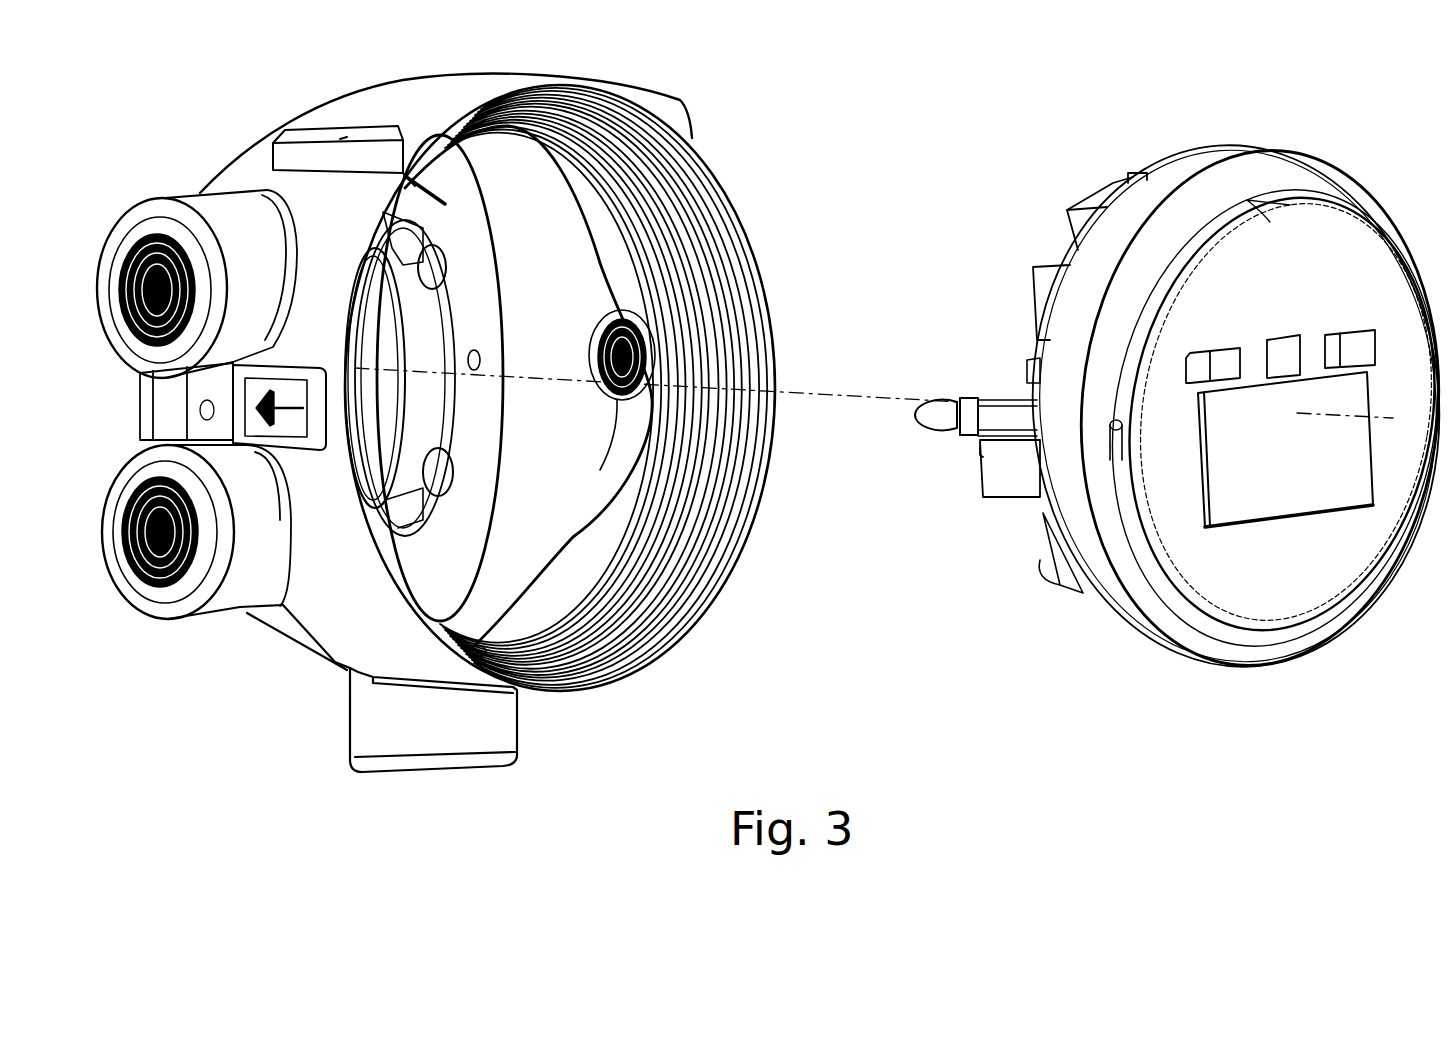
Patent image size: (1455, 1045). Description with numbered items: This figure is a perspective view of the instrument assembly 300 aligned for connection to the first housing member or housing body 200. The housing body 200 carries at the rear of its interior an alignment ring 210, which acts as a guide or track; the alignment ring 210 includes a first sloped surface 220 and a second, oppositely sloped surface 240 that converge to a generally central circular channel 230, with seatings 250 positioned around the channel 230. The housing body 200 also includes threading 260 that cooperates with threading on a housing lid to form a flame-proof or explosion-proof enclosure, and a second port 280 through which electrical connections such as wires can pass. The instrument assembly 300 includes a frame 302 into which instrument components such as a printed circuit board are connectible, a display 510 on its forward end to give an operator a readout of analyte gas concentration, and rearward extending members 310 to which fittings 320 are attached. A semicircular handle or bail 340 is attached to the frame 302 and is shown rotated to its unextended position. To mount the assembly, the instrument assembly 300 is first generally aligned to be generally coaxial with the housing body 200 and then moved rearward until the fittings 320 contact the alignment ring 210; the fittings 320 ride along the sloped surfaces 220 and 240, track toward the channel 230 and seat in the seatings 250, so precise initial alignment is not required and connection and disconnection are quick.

The housing body 200 is at (287, 653).
The alignment ring 210 is at (450, 190).
The first sloped surface 220 is at (472, 257).
The central circular channel 230 is at (463, 293).
The second sloped surface 240 is at (458, 407).
The seatings 250 is at (483, 357).
The threading 260 is at (647, 577).
The second port 280 is at (658, 382).
The instrument assembly 300 is at (1285, 142).
The frame 302 is at (1138, 617).
The rearward extending members 310 is at (1000, 443).
The fittings 320 is at (932, 415).
The bail 340 is at (1207, 623).
The display 510 is at (1230, 490).